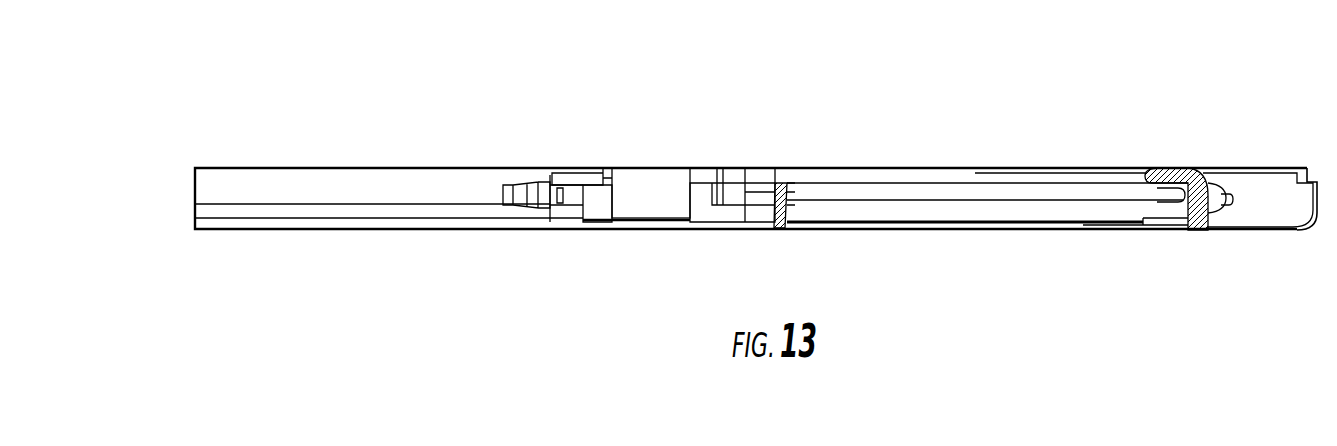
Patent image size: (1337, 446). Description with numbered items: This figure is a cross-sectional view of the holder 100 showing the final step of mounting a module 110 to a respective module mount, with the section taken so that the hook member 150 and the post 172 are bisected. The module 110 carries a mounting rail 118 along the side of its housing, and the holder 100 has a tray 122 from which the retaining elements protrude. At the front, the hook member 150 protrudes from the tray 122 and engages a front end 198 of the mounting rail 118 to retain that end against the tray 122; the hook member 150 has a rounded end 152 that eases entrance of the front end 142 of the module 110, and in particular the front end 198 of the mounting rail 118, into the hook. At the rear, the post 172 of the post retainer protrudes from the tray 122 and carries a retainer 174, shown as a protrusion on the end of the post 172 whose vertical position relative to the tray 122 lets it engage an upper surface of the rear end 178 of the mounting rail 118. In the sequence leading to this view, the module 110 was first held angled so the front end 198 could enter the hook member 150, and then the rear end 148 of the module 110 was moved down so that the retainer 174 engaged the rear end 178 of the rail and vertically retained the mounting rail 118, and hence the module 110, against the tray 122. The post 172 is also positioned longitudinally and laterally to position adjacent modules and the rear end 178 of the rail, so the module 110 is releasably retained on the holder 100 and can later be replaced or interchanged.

The holder 100 is at (282, 158).
The module 110 is at (675, 180).
The mounting rail 118 is at (965, 190).
The tray 122 is at (957, 232).
The front end 142 is at (1040, 178).
The rear end 148 is at (628, 182).
The hook member 150 is at (1230, 183).
The rounded end 152 is at (1175, 167).
The post 172 is at (782, 228).
The retainer 174 is at (790, 181).
The rear end 178 is at (822, 190).
The front end 198 is at (1167, 192).